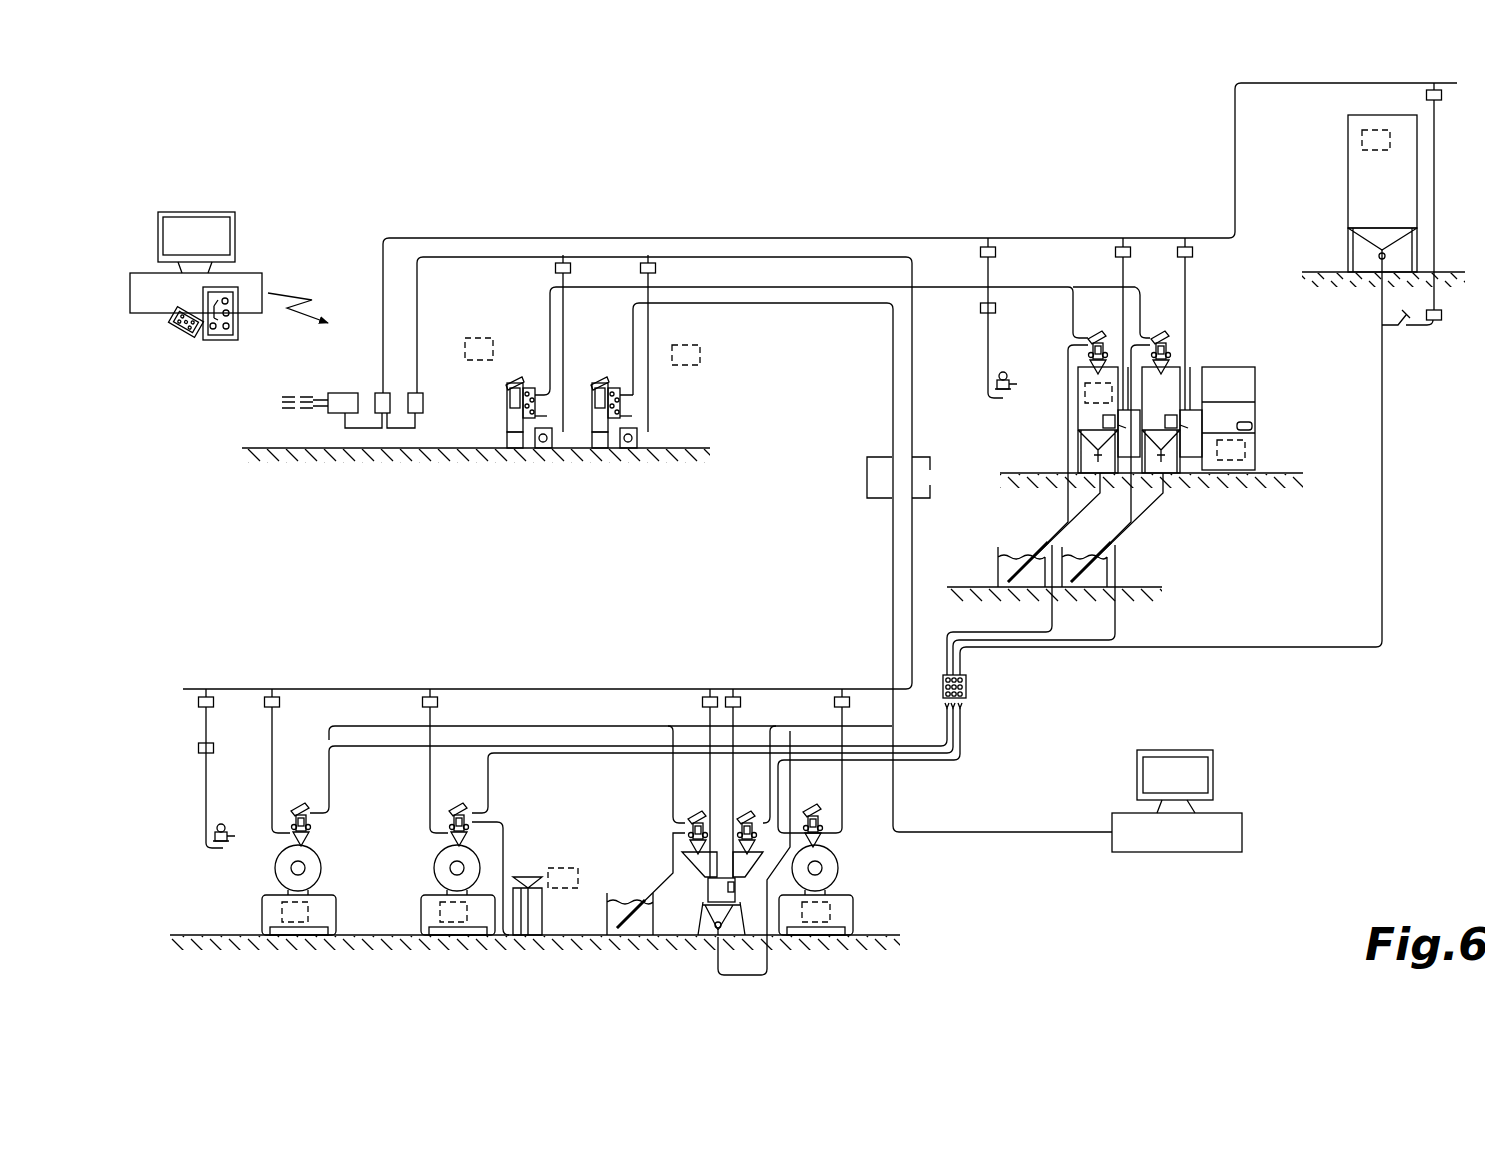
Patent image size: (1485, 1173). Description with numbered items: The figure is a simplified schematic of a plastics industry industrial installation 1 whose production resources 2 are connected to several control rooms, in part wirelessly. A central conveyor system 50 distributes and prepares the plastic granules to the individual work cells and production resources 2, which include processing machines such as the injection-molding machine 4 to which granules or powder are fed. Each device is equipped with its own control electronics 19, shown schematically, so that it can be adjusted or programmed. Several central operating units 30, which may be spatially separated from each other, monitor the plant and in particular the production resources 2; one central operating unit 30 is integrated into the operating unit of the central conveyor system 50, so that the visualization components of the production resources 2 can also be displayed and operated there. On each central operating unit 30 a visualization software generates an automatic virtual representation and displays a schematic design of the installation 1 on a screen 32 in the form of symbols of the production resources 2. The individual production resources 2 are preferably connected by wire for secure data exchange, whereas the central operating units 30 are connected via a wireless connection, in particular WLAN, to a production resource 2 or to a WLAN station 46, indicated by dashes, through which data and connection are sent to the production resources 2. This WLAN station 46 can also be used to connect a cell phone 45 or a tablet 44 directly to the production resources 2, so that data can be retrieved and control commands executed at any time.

The industrial installation 1 is at (352, 222).
The production resource 2 is at (520, 298).
The injection-molding machine 4 is at (270, 912).
The control electronics 19 is at (512, 387).
The central operating unit 30 is at (177, 185).
The screen 32 is at (218, 228).
The tablet 44 is at (230, 320).
The cell phone 45 is at (178, 323).
The WLAN station 46 is at (887, 477).
The central conveyor system 50 is at (1270, 800).